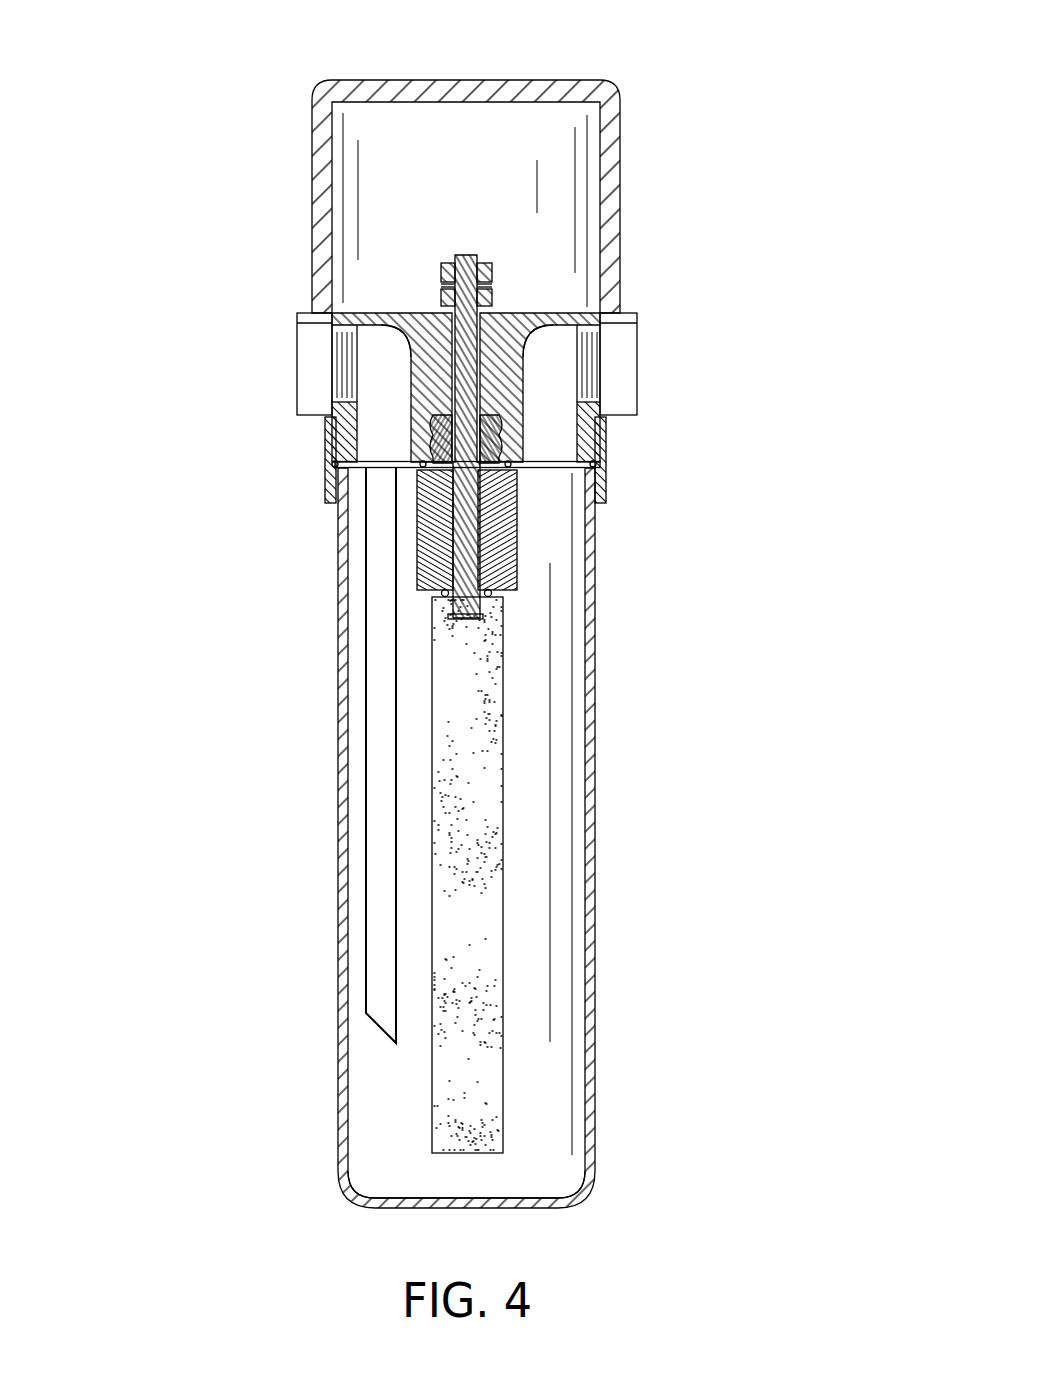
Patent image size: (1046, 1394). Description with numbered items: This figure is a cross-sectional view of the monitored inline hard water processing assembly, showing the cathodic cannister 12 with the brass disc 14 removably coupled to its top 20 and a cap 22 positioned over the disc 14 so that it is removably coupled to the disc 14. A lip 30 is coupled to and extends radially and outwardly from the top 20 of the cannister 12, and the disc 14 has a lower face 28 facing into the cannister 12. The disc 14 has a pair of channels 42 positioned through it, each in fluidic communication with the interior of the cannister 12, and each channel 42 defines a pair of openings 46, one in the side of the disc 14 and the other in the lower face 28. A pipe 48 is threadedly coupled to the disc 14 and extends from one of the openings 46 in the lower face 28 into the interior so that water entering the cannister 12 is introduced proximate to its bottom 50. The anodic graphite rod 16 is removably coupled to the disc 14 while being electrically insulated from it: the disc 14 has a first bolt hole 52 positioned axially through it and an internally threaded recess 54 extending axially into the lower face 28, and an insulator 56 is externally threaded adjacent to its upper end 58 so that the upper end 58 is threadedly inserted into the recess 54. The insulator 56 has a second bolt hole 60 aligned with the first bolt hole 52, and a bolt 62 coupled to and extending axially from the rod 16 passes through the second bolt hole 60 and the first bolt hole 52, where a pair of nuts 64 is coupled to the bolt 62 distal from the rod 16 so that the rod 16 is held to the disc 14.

The cannister 12 is at (337, 732).
The disc 14 is at (413, 321).
The rod 16 is at (472, 838).
The top 20 is at (451, 422).
The cap 22 is at (624, 183).
The lower face 28 is at (561, 484).
The lip 30 is at (325, 481).
The channels 42 is at (395, 391).
The openings 46 is at (379, 451).
The pipe 48 is at (381, 820).
The bottom 50 is at (510, 1191).
The first bolt hole 52 is at (462, 340).
The recess 54 is at (497, 423).
The insulator 56 is at (429, 573).
The upper end 58 is at (378, 474).
The second bolt hole 60 is at (475, 520).
The bolt 62 is at (453, 268).
The nuts 64 is at (494, 296).